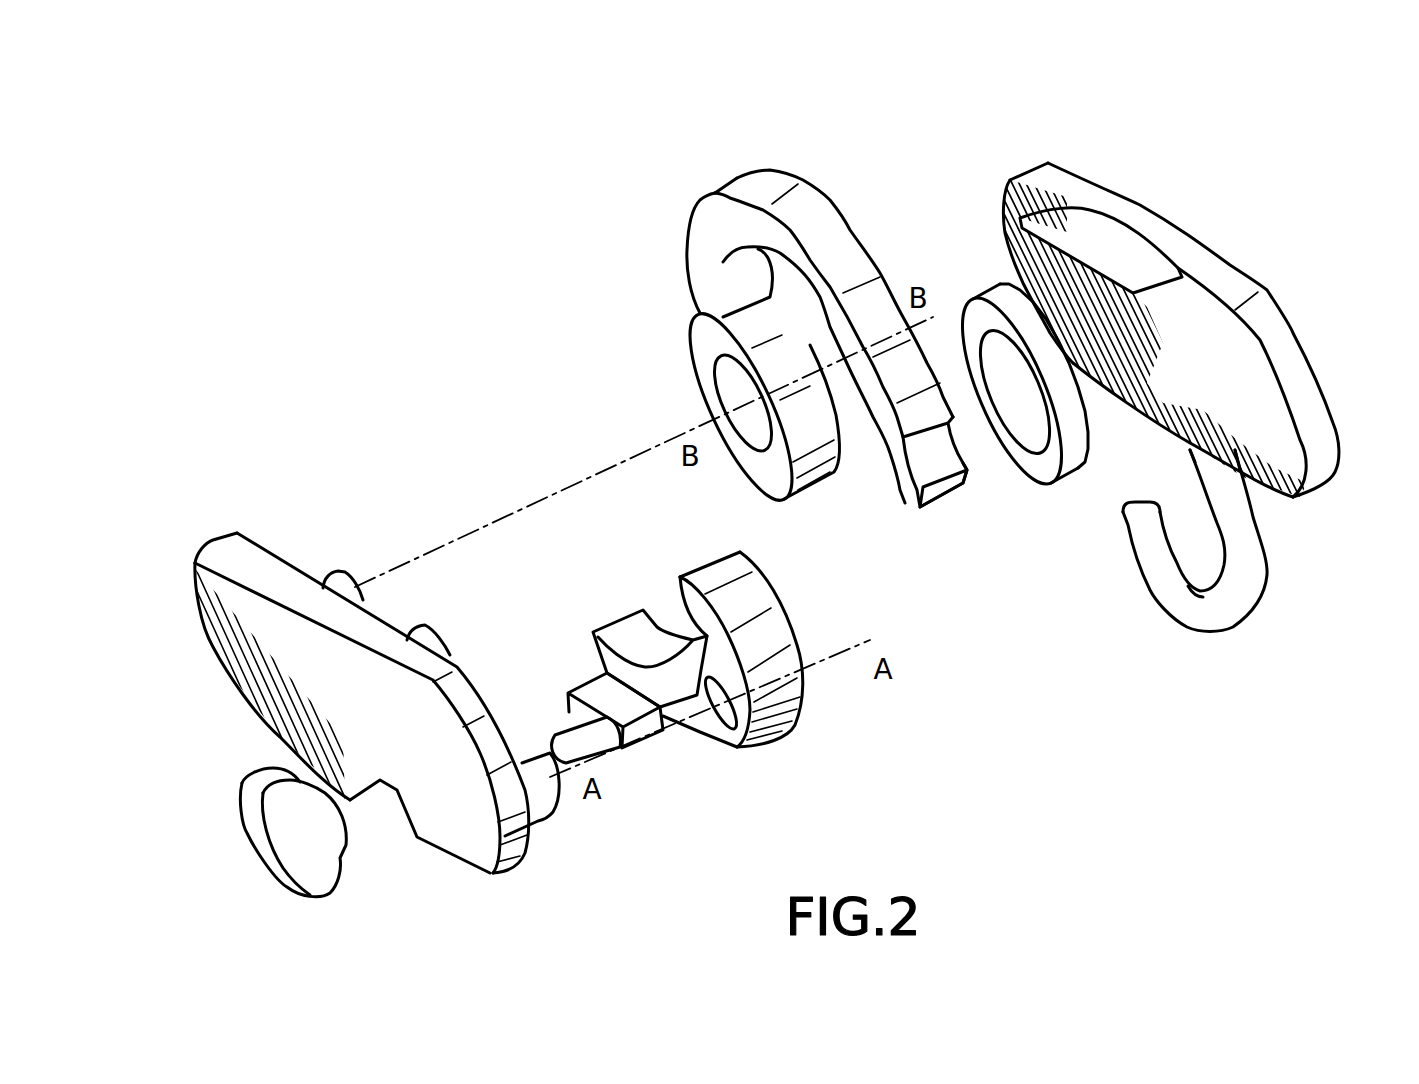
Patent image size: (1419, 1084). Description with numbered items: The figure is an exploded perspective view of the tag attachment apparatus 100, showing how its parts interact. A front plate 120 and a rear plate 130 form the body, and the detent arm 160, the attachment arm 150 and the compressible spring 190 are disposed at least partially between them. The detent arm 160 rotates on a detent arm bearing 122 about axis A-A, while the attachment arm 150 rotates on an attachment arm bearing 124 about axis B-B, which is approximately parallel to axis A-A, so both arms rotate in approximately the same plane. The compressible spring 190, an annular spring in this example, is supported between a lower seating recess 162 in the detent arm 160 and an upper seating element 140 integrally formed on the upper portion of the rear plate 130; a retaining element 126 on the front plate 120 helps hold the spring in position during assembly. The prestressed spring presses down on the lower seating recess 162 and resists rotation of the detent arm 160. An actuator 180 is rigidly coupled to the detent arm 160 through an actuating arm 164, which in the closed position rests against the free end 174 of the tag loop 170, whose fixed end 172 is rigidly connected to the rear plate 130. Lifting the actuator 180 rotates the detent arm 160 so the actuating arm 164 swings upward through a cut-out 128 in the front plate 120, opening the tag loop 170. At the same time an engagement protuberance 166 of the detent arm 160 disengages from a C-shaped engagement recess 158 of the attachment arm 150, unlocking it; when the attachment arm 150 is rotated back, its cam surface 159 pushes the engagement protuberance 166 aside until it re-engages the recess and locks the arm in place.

The tag attachment apparatus 100 is at (480, 320).
The front plate 120 is at (238, 688).
The detent arm bearing 122 is at (550, 817).
The attachment arm bearing 124 is at (343, 571).
The retaining element 126 is at (443, 625).
The cut-out 128 is at (403, 813).
The rear plate 130 is at (1300, 302).
The upper seating element 140 is at (1090, 230).
The attachment arm 150 is at (732, 175).
The C-shaped engagement recess 158 is at (970, 458).
The cam surface 159 is at (907, 507).
The detent arm 160 is at (797, 737).
The lower seating recess 162 is at (660, 613).
The actuating arm 164 is at (563, 703).
The engagement protuberance 166 is at (683, 597).
The tag loop 170 is at (1240, 622).
The fixed end 172 is at (1265, 500).
The free end 174 is at (1123, 512).
The actuator 180 is at (247, 805).
The compressible spring 190 is at (995, 290).